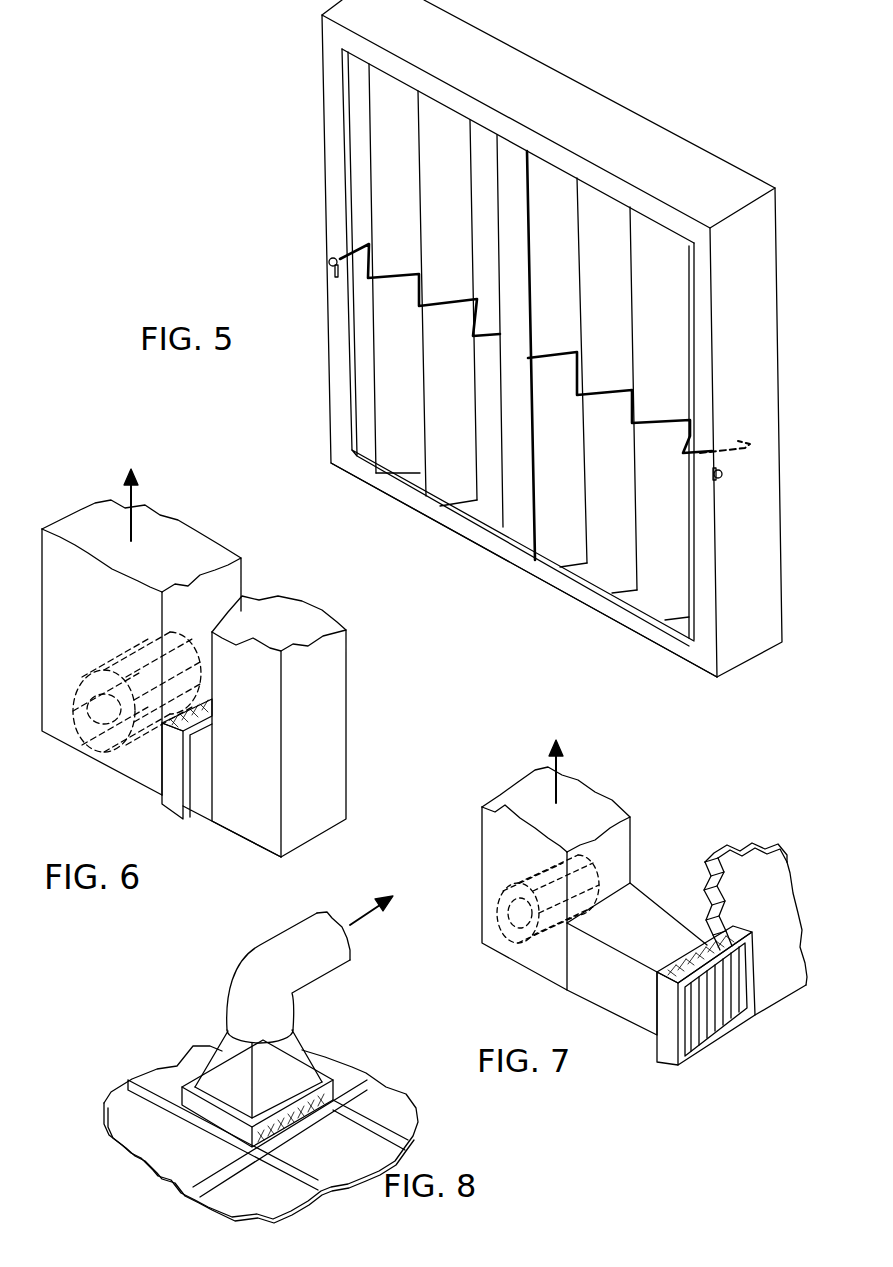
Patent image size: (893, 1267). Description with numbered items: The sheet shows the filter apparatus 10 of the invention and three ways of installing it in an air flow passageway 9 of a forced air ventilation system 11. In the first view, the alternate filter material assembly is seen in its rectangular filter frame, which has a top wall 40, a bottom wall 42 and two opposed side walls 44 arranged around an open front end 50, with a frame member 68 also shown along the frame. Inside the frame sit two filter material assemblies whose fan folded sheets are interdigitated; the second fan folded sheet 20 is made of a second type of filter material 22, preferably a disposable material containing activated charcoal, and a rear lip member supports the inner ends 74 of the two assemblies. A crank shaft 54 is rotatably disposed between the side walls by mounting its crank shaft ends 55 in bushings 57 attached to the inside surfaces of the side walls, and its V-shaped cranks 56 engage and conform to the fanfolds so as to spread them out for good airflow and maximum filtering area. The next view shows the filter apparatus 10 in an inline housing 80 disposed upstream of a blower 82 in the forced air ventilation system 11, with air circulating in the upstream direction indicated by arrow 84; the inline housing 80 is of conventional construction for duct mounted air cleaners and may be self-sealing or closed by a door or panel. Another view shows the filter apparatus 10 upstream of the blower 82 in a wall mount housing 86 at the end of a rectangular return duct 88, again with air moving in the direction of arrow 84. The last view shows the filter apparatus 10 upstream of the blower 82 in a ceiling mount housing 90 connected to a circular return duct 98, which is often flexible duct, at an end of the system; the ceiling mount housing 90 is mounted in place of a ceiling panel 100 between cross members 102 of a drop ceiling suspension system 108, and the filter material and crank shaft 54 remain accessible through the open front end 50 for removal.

In FIG. 6, the air flow passageway 9 is at (202, 793).
In FIG. 7, the air flow passageway 9 is at (597, 992).
In FIG. 8, the air flow passageway 9 is at (327, 963).
In FIG. 5, the filter apparatus 10 is at (655, 83).
In FIG. 6, the filter apparatus 10 is at (202, 691).
In FIG. 7, the filter apparatus 10 is at (709, 1068).
In FIG. 8, the filter apparatus 10 is at (340, 1084).
In FIG. 6, the forced air ventilation system 11 is at (69, 793).
In FIG. 7, the forced air ventilation system 11 is at (483, 995).
In FIG. 5, the second fan folded sheet 20 is at (610, 572).
In FIG. 5, the second type of filter material 22 is at (655, 612).
In FIG. 5, the top wall 40 is at (718, 195).
In FIG. 5, the bottom wall 42 is at (420, 473).
In FIG. 5, the side wall 44 is at (748, 277).
In FIG. 5, the open front end 50 is at (336, 422).
In FIG. 5, the crank shaft 54 is at (665, 415).
In FIG. 5, the crank shaft ends 55 is at (332, 252).
In FIG. 5, the cranks 56 is at (367, 280).
In FIG. 5, the bushings 57 is at (325, 260).
In FIG. 5, the top frame member 68 is at (447, 82).
In FIG. 5, the inner ends 74 is at (575, 576).
In FIG. 6, the inline housing 80 is at (162, 800).
In FIG. 6, the blower 82 is at (114, 661).
In FIG. 7, the blower 82 is at (532, 868).
In FIG. 6, the arrow 84 is at (133, 501).
In FIG. 7, the arrow 84 is at (558, 775).
In FIG. 8, the arrow 84 is at (350, 925).
In FIG. 7, the wall mount housing 86 is at (663, 1047).
In FIG. 6, the rectangular return duct 88 is at (320, 719).
In FIG. 7, the rectangular return duct 88 is at (657, 920).
In FIG. 8, the ceiling mount housing 90 is at (180, 1088).
In FIG. 8, the circular return duct 98 is at (267, 930).
In FIG. 8, the ceiling panel 100 is at (177, 1153).
In FIG. 8, the cross members 102 is at (133, 1128).
In FIG. 8, the drop ceiling suspension system 108 is at (317, 1158).